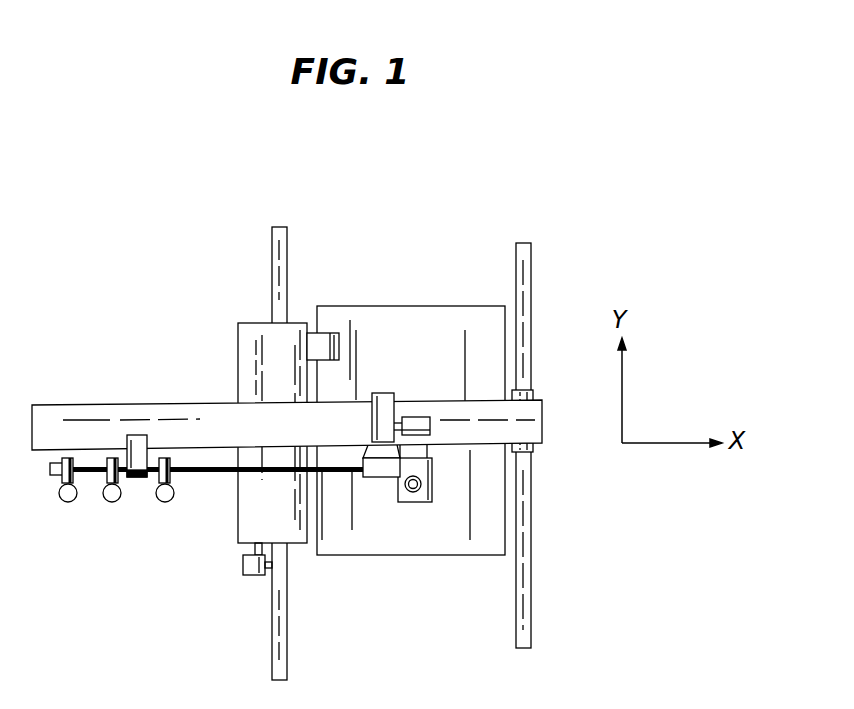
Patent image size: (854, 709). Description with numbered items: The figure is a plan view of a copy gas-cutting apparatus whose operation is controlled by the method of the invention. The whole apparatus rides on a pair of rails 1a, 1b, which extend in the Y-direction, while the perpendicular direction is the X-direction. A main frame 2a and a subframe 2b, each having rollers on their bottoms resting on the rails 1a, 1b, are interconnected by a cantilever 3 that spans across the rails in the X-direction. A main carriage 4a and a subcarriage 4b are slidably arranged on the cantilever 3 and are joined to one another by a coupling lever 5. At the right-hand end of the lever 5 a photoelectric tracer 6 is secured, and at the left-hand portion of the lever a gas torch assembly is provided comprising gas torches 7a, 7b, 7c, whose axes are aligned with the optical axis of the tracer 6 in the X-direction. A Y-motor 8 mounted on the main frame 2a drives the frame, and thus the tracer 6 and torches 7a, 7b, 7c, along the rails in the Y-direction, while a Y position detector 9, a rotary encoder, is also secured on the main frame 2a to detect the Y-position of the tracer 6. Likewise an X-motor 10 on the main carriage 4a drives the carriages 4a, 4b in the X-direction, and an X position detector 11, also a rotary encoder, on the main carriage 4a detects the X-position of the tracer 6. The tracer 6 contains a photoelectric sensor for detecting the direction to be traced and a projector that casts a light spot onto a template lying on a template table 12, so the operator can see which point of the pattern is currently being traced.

The rail 1a is at (288, 643).
The rail 1b is at (532, 558).
The main frame 2a is at (238, 358).
The subframe 2b is at (533, 452).
The cantilever 3 is at (132, 405).
The main carriage 4a is at (378, 480).
The subcarriage 4b is at (137, 477).
The coupling lever 5 is at (220, 472).
The photoelectric tracer 6 is at (427, 500).
The gas torch 7a is at (68, 502).
The gas torch 7b is at (112, 502).
The gas torch 7c is at (165, 502).
The Y-motor 8 is at (327, 340).
The Y position detector 9 is at (253, 578).
The X-motor 10 is at (378, 395).
The X position detector 11 is at (420, 420).
The template table 12 is at (473, 557).